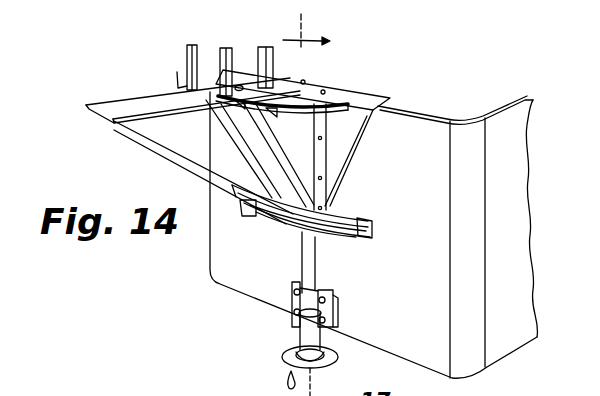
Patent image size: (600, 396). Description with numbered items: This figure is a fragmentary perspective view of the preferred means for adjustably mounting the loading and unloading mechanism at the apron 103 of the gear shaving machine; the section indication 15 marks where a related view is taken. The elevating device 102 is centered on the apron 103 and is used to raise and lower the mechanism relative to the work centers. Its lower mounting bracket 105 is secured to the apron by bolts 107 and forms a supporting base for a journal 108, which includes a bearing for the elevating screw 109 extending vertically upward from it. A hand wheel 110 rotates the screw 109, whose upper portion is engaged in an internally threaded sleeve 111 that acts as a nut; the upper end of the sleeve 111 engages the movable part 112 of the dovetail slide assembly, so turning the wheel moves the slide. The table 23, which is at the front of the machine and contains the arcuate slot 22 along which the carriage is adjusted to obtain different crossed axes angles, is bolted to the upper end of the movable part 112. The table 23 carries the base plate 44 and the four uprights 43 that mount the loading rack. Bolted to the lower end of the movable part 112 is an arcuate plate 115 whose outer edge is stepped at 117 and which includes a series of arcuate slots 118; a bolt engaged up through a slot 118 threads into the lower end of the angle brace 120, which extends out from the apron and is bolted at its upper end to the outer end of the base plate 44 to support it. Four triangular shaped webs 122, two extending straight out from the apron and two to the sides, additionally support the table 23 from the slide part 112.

The section line indicator 15 is at (330, 35).
The arcuate slot 22 is at (330, 100).
The table 23 is at (367, 100).
The uprights or legs 43 is at (221, 56).
The base plate 44 is at (147, 103).
The elevating device 102 is at (344, 172).
The apron 103 is at (428, 127).
The lower mounting bracket 105 is at (328, 325).
The bolts 107 is at (327, 293).
The journal 108 is at (308, 336).
The elevating screw 109 is at (306, 303).
The hand wheel 110 is at (330, 360).
The internally threaded sleeve 111 is at (318, 257).
The movable part of the dovetail slide assembly 112 is at (287, 208).
The arcuate plate 115 is at (340, 213).
The stepped outer edge 117 is at (358, 222).
The arcuate slots 118 is at (353, 233).
The angle brace 120 is at (189, 168).
The triangular shaped webs 122 is at (272, 147).